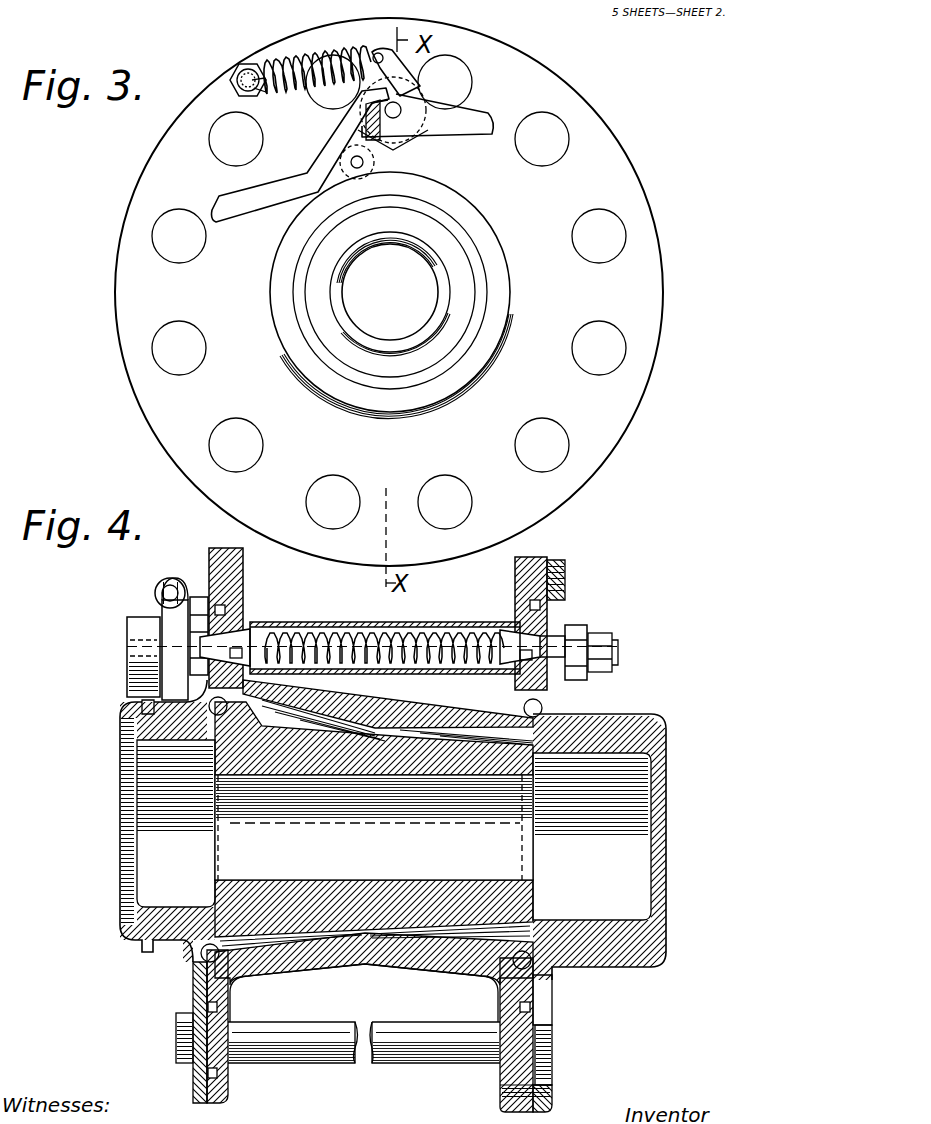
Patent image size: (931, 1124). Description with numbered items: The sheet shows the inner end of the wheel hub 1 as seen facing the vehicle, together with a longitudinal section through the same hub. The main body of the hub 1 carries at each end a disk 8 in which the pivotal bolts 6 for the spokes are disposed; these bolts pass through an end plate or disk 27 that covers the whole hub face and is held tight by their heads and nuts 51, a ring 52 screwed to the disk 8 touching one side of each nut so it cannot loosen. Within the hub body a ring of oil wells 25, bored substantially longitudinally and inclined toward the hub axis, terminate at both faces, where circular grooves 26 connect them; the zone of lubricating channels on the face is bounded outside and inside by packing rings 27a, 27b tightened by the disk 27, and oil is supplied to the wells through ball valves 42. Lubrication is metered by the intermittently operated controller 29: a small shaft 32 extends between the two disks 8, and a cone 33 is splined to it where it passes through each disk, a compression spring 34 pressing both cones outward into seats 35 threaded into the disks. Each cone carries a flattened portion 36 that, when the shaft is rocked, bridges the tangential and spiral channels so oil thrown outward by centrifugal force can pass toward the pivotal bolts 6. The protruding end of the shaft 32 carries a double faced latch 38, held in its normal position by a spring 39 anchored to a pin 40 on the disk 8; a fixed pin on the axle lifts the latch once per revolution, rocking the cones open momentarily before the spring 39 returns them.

In FIG. 4, the hub 1 is at (116, 758).
In FIG. 3, the pivotal bolts 6 is at (242, 432).
In FIG. 4, the pivotal bolts 6 is at (263, 1032).
In FIG. 4, the disks or flanges 8 is at (515, 593).
In FIG. 4, the oil wells 25 is at (380, 930).
In FIG. 4, the circular grooves 26 is at (193, 998).
In FIG. 3, the end plate or disk 27 is at (618, 192).
In FIG. 4, the end plate or disk 27 is at (328, 1031).
In FIG. 4, the outer packing ring 27a is at (500, 1083).
In FIG. 4, the inner packing ring 27b is at (500, 995).
In FIG. 3, the intermittently operated controller 29 is at (410, 72).
In FIG. 3, the small shaft 32 is at (395, 118).
In FIG. 4, the small shaft 32 is at (335, 630).
In FIG. 4, the cone 33 is at (537, 657).
In FIG. 4, the compression spring 34 is at (432, 626).
In FIG. 4, the seats 35 is at (540, 645).
In FIG. 4, the flattened portion 36 is at (600, 638).
In FIG. 3, the double faced latch 38 is at (267, 197).
In FIG. 4, the double faced latch 38 is at (142, 623).
In FIG. 3, the spring 39 is at (287, 62).
In FIG. 4, the spring 39 is at (162, 583).
In FIG. 3, the pin 40 is at (243, 77).
In FIG. 3, the ball valves 42 is at (368, 166).
In FIG. 4, the nuts 51 is at (548, 1045).
In FIG. 4, the ring 52 is at (545, 1087).